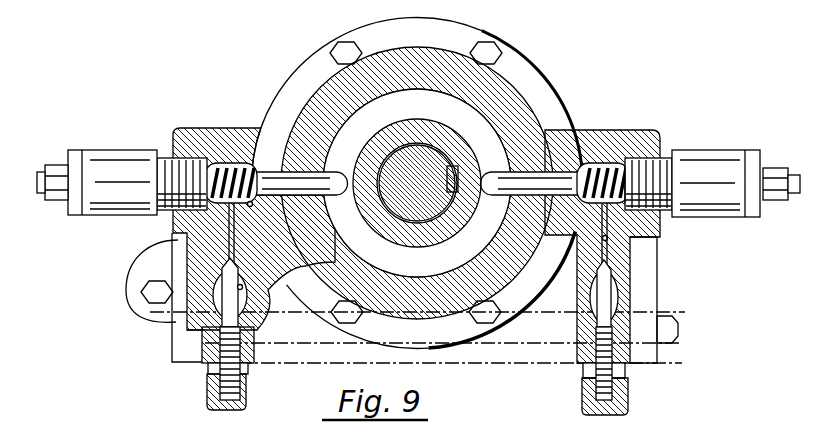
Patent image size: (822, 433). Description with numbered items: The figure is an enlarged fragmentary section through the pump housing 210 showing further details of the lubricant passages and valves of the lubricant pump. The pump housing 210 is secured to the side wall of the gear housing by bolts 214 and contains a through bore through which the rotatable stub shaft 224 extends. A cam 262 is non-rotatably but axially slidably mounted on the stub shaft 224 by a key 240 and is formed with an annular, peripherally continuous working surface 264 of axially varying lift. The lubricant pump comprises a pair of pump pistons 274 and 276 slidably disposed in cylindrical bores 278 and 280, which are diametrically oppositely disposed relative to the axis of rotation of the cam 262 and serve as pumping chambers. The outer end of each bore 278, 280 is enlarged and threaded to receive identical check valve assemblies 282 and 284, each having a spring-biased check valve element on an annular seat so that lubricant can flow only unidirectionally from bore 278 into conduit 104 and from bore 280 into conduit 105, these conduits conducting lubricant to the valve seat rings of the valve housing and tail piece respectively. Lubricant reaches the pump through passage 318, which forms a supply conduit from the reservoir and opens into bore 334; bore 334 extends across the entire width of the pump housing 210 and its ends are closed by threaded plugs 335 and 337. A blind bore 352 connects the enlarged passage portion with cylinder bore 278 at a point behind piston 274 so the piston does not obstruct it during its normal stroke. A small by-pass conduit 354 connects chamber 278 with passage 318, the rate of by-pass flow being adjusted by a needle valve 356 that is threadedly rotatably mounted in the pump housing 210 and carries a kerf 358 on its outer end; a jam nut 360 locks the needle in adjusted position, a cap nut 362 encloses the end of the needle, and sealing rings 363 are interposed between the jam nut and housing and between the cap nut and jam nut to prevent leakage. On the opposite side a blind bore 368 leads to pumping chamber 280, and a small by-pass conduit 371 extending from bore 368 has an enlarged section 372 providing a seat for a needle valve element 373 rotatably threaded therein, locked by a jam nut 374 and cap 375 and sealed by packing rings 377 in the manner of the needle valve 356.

The conduit 104 is at (47, 172).
The conduit 105 is at (776, 168).
The pump housing 210 is at (413, 38).
The bolts 214 is at (152, 282).
The stub shaft 224 is at (417, 183).
The key 240 is at (446, 176).
The cam 262 is at (385, 132).
The working surface 264 is at (446, 124).
The pump piston 274 is at (297, 172).
The pump piston 276 is at (586, 163).
The cylindrical bore 278 is at (250, 163).
The cylindrical bore 280 is at (552, 163).
The check valve assembly 282 is at (130, 143).
The check valve assembly 284 is at (704, 142).
The passage 318 is at (243, 287).
The bore 334 is at (491, 338).
The threaded plug 335 is at (150, 322).
The threaded plug 337 is at (679, 330).
The blind bore 352 is at (251, 206).
The by-pass conduit 354 is at (226, 220).
The needle valve 356 is at (186, 330).
The kerf 358 is at (207, 407).
The jam nut 360 is at (206, 366).
The cap nut 362 is at (228, 397).
The sealing rings 363 is at (250, 368).
The blind bore 368 is at (624, 152).
The by-pass conduit 371 is at (608, 238).
The enlarged section 372 is at (609, 285).
The needle valve element 373 is at (588, 366).
The jam nut 374 is at (627, 369).
The cap 375 is at (629, 408).
The packing rings 377 is at (633, 374).